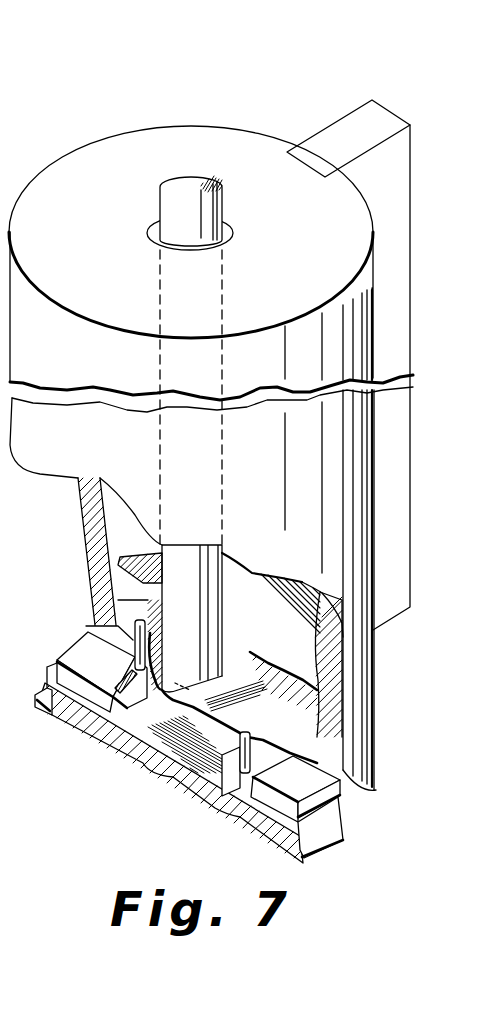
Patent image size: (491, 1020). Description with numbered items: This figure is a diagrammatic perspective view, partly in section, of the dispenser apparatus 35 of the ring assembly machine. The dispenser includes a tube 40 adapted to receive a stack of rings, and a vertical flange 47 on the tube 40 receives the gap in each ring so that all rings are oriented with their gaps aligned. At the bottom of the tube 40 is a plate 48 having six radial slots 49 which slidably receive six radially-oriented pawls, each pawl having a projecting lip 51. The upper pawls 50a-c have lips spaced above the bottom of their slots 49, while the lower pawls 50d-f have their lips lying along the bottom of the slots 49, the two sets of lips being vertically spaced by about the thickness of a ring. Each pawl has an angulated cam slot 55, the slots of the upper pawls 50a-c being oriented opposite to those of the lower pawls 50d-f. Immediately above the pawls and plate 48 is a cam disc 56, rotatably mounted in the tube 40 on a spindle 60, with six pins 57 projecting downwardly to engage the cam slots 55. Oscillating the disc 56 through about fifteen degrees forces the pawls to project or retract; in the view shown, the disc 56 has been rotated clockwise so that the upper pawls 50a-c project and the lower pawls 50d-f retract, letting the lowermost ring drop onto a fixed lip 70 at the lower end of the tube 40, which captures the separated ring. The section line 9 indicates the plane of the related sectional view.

The drive assembly 35 is at (276, 32).
The tube 40 is at (211, 458).
The vertical flange 47 is at (400, 182).
The plate 48 is at (188, 787).
The radial slots 49 is at (75, 717).
The upper pawls 50a-c is at (280, 800).
The lower pawls 50d-f is at (80, 655).
The projecting lip 51 is at (52, 663).
The cam slot 55 is at (120, 684).
The cam disc 56 is at (263, 657).
The pins 57 is at (150, 636).
The spindle 60 is at (160, 463).
The fixed lip 70 is at (37, 693).
The section line 9- 9 is at (12, 810).